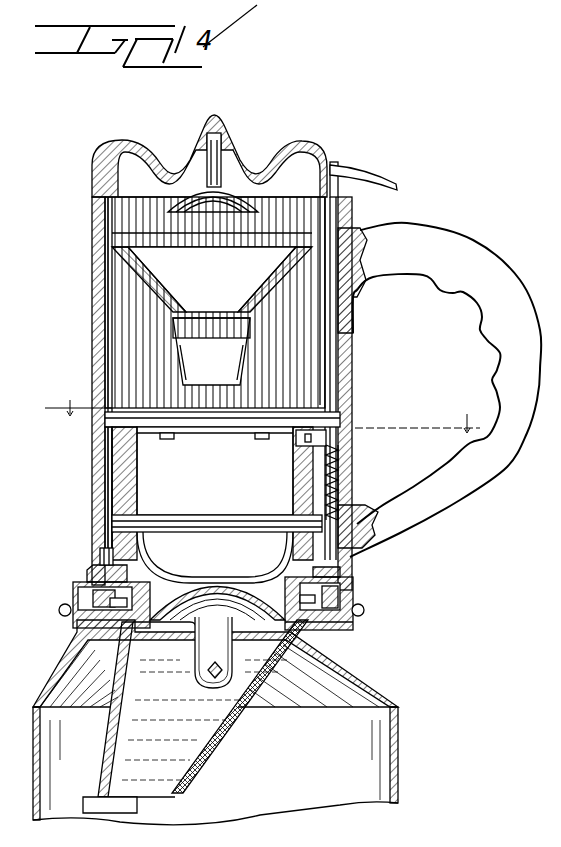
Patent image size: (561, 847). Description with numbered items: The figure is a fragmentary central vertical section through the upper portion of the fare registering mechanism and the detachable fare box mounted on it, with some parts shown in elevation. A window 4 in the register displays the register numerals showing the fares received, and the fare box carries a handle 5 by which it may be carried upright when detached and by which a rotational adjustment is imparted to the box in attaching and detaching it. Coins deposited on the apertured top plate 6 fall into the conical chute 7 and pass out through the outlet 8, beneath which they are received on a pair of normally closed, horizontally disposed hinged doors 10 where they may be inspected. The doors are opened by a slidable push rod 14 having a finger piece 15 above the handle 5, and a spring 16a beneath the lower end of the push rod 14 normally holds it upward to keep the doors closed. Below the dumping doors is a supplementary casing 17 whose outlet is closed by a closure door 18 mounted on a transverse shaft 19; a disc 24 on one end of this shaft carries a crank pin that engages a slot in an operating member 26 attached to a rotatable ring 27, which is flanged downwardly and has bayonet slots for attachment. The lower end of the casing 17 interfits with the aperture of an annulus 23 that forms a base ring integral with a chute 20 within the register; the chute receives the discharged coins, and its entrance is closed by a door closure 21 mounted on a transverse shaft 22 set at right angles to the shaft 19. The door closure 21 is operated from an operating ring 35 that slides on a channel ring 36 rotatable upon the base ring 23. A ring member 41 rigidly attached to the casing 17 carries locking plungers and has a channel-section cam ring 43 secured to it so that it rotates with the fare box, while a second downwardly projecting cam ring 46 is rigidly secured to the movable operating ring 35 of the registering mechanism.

The window 4 is at (395, 766).
The handle 5 is at (470, 262).
The apertured top plate 6 is at (230, 168).
The conical chute 7 is at (212, 279).
The outlet 8 is at (211, 351).
The hinged doors 10 is at (213, 427).
The slidable push rod 14 is at (330, 378).
The finger piece 15 is at (383, 181).
The spring 16a is at (326, 465).
The supplementary casing 17 is at (296, 478).
The closure door 18 is at (223, 600).
The transverse shaft 19 is at (198, 522).
The chute 20 is at (195, 716).
The door closure 21 is at (231, 600).
The transverse shaft 22 is at (222, 670).
The annulus 23 is at (353, 627).
The disc 24 is at (338, 512).
The operating member 26 is at (364, 607).
The rotatable ring 27 is at (350, 582).
The operating ring 35 is at (80, 603).
The channel ring 36 is at (90, 622).
The ring member 41 is at (153, 590).
The cam ring 43 is at (136, 625).
The cam ring 46 is at (98, 580).